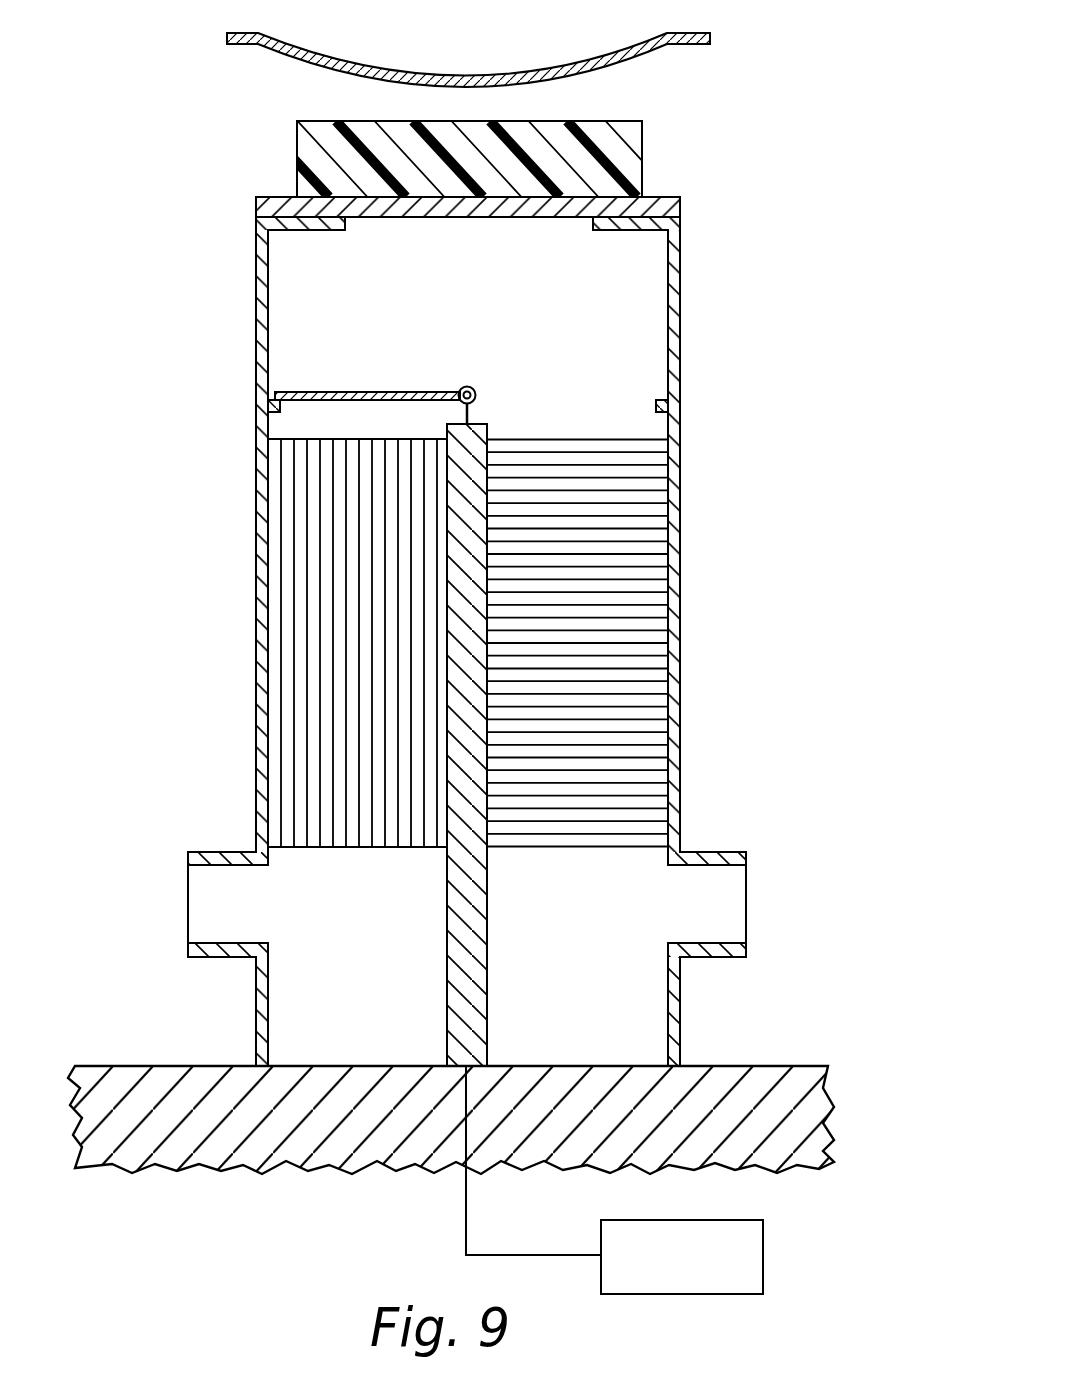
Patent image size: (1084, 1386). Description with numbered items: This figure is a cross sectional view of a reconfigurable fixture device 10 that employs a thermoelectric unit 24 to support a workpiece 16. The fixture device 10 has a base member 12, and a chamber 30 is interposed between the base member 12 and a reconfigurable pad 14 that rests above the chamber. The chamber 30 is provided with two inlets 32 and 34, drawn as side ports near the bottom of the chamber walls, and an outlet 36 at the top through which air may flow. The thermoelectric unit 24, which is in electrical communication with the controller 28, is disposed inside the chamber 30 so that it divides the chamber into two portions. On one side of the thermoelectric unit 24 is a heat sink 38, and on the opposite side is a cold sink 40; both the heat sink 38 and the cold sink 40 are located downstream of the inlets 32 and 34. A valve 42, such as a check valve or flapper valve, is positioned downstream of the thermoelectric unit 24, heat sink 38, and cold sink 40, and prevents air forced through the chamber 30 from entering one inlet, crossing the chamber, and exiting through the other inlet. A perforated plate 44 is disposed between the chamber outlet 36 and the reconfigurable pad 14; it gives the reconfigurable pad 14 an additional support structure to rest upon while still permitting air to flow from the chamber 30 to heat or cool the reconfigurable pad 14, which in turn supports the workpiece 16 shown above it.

The fixture device 10 is at (107, 189).
The base member 12 is at (767, 1066).
The reconfigurable pad 14 is at (297, 151).
The workpiece 16 is at (713, 37).
The thermoelectric unit 24 is at (482, 990).
The controller 28 is at (763, 1255).
The chamber 30 is at (637, 320).
The inlet 32 is at (190, 903).
The inlet 34 is at (741, 905).
The outlet 36 is at (436, 244).
The heat sink 38 is at (273, 587).
The cold sink 40 is at (650, 573).
The valve 42 is at (367, 393).
The perforated plate 44 is at (681, 207).